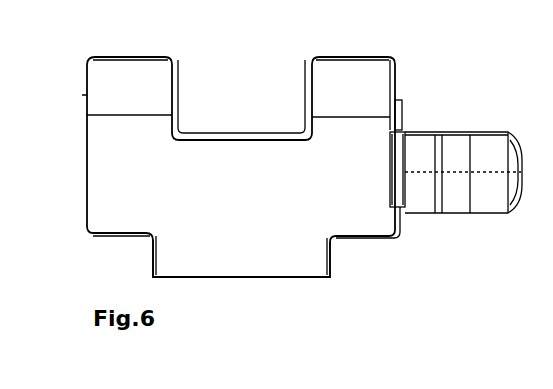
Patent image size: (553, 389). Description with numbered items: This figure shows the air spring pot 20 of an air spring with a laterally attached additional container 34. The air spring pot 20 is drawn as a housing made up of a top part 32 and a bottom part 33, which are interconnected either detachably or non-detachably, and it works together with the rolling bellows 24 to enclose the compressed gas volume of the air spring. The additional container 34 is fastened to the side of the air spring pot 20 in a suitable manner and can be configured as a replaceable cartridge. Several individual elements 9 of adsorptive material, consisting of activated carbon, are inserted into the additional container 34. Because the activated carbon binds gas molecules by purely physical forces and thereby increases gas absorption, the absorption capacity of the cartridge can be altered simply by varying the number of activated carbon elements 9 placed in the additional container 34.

The element of adsorptive material 9 is at (455, 177).
The air spring pot 20 is at (400, 90).
The rolling bellows 24 is at (243, 167).
The top part 32 is at (380, 58).
The bottom part 33 is at (345, 232).
The additional container 34 is at (432, 220).